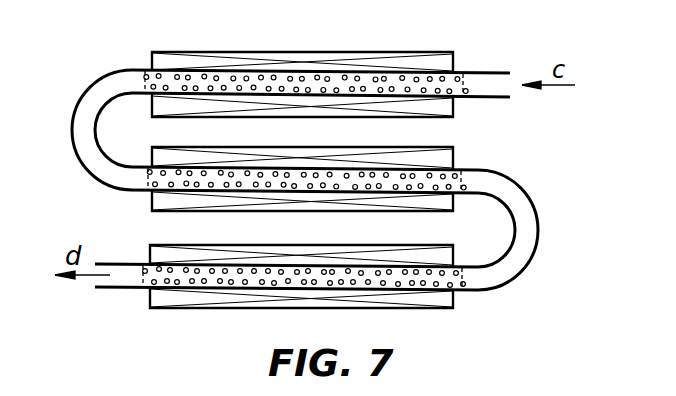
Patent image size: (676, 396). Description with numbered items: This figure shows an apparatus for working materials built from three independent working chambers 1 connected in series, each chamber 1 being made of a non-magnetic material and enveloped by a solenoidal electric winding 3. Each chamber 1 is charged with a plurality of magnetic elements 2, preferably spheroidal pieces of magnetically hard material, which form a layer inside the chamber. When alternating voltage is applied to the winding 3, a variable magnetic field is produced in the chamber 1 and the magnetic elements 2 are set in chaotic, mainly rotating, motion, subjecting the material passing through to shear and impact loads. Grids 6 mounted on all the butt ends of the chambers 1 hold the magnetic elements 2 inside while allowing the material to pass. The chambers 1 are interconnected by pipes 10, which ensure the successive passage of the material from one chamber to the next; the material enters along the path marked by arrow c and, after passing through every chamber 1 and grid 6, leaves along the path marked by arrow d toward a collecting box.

The working chamber 1 is at (151, 69).
The magnetic elements 2 is at (252, 80).
The electric winding 3 is at (307, 56).
The grid 6 is at (463, 82).
The pipes 10 is at (88, 94).